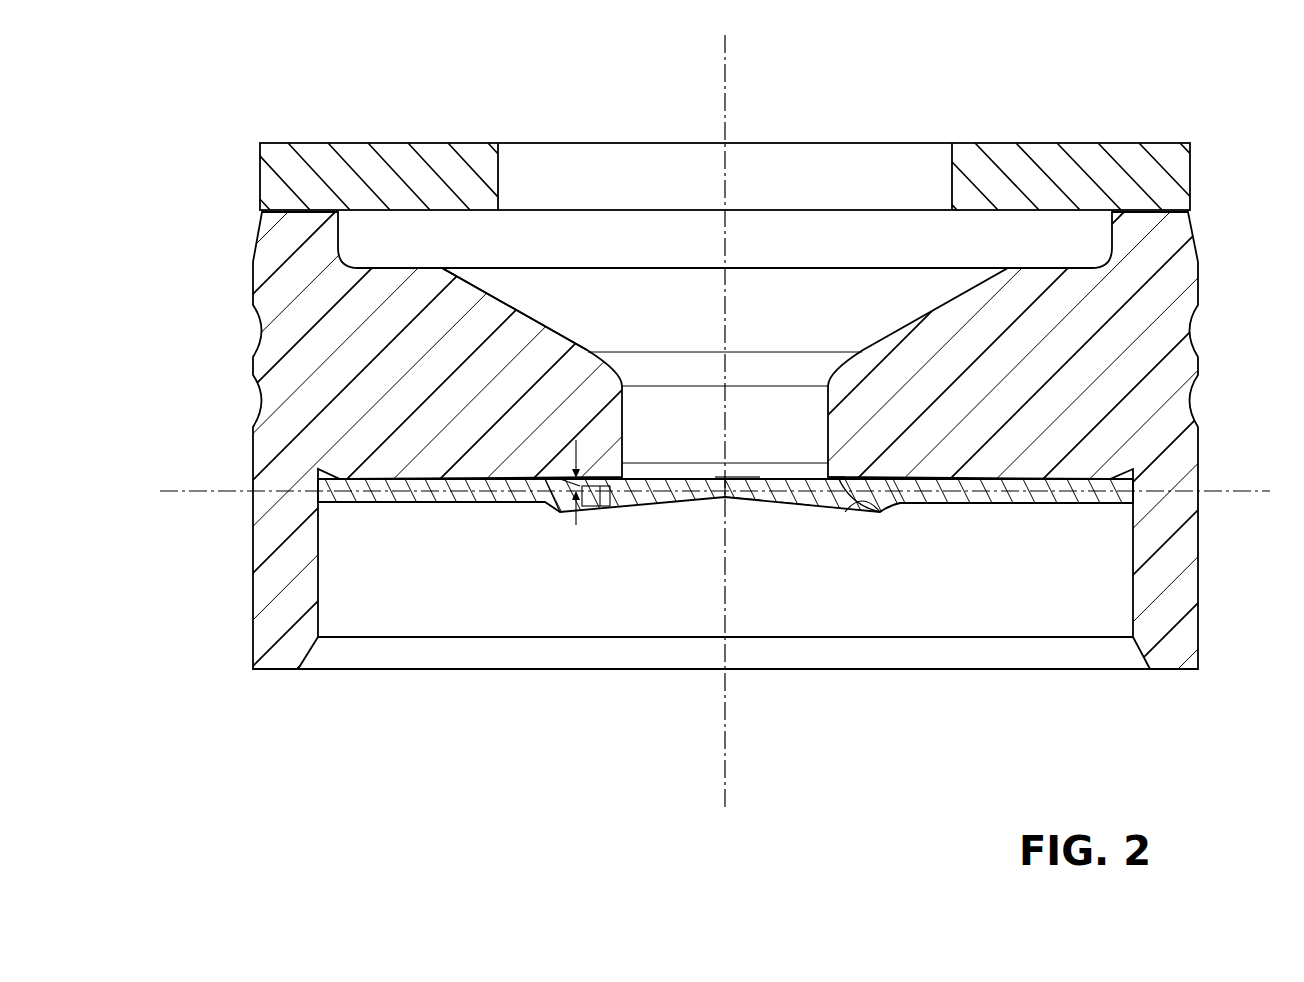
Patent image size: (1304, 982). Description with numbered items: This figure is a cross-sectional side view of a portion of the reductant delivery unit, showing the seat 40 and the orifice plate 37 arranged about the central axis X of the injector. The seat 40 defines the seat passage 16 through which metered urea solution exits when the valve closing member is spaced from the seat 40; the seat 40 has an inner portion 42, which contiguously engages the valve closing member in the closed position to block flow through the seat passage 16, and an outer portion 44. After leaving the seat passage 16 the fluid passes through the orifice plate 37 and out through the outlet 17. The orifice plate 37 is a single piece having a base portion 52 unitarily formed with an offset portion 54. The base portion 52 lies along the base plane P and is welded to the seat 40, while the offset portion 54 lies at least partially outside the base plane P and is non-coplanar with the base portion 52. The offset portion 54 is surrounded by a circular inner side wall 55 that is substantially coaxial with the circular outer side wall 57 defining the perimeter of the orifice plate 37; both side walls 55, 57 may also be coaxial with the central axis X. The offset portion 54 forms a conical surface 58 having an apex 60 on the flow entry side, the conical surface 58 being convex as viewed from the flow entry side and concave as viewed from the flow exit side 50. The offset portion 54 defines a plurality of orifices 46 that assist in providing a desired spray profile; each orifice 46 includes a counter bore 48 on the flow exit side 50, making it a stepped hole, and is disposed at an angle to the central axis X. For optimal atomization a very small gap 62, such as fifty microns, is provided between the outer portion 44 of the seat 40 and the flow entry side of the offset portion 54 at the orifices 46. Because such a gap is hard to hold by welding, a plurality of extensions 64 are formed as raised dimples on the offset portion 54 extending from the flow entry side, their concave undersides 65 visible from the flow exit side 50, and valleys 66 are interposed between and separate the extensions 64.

The central axis X is at (728, 78).
The base plane P is at (209, 492).
The seat passage 16 is at (638, 430).
The outlet 17 is at (425, 678).
The orifice plate 37 is at (975, 507).
The seat 40 is at (1130, 287).
The inner portion 42 is at (492, 307).
The outer portion 44 is at (400, 483).
The orifices 46 is at (593, 517).
The counter bore 48 is at (605, 515).
The flow exit side 50 is at (753, 500).
The base portion 52 is at (1053, 498).
The offset portion 54 is at (805, 500).
The inner side wall 55 is at (892, 507).
The outer side wall 57 is at (1134, 495).
The conical surface 58 is at (742, 478).
The apex 60 is at (727, 481).
The gap 62 is at (572, 496).
The extensions 64 is at (843, 480).
The concave undersides 65 is at (847, 500).
The valleys 66 is at (567, 508).